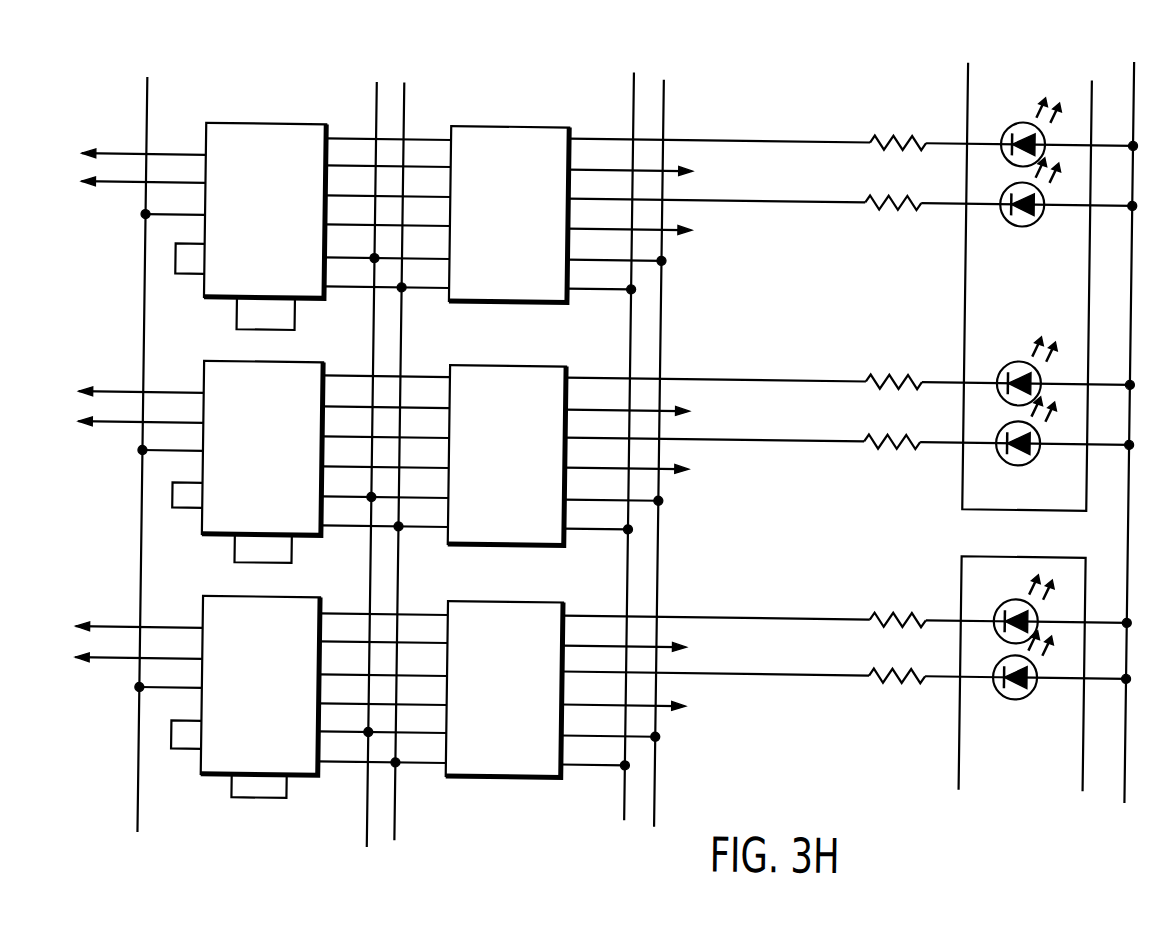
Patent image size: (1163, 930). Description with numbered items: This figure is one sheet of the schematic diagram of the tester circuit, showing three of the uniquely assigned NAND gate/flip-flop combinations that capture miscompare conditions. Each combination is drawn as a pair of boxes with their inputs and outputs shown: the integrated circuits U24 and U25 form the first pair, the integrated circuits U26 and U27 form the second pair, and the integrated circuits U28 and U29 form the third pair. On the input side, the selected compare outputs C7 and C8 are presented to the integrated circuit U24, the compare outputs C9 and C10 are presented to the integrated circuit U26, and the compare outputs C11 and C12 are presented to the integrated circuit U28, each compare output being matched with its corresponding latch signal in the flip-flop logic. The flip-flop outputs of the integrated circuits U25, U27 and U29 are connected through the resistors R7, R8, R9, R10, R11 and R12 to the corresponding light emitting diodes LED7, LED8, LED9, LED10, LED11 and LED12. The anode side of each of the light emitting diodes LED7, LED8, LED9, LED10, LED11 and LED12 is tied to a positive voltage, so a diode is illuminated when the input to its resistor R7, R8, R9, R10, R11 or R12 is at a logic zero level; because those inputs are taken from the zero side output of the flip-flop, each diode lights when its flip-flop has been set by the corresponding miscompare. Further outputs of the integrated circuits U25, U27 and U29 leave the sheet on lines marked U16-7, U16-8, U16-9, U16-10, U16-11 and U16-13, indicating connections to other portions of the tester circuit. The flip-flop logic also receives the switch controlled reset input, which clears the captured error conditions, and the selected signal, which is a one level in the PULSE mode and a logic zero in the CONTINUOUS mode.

The integrated circuit U24 is at (296, 223).
The integrated circuit U25 is at (647, 211).
The integrated circuit U26 is at (294, 458).
The integrated circuit U27 is at (645, 452).
The integrated circuit U28 is at (290, 695).
The integrated circuit U29 is at (646, 687).
The resistor R7 is at (898, 119).
The resistor R8 is at (894, 183).
The resistor R9 is at (895, 358).
The resistor R10 is at (892, 421).
The resistor R11 is at (898, 598).
The resistor R12 is at (897, 655).
The light emitting diode LED7 is at (1032, 129).
The light emitting diode LED8 is at (1029, 192).
The light emitting diode LED9 is at (1028, 371).
The light emitting diode LED10 is at (1027, 431).
The light emitting diode LED11 is at (1029, 609).
The light emitting diode LED12 is at (1028, 665).
The compare output C7 is at (144, 145).
The compare output C8 is at (143, 173).
The compare output C9 is at (141, 383).
The compare output C10 is at (140, 414).
The compare output C11 is at (139, 619).
The compare output C12 is at (138, 650).
The connection to U16 pin 7 U16-7 is at (671, 170).
The connection to U16 pin 8 U16-8 is at (670, 229).
The connection to U16 pin 9 U16-9 is at (664, 410).
The connection to U16 pin 10 U16-10 is at (669, 468).
The connection to U16 pin 11 U16-11 is at (664, 647).
The connection to U16 pin 13 U16-13 is at (666, 706).